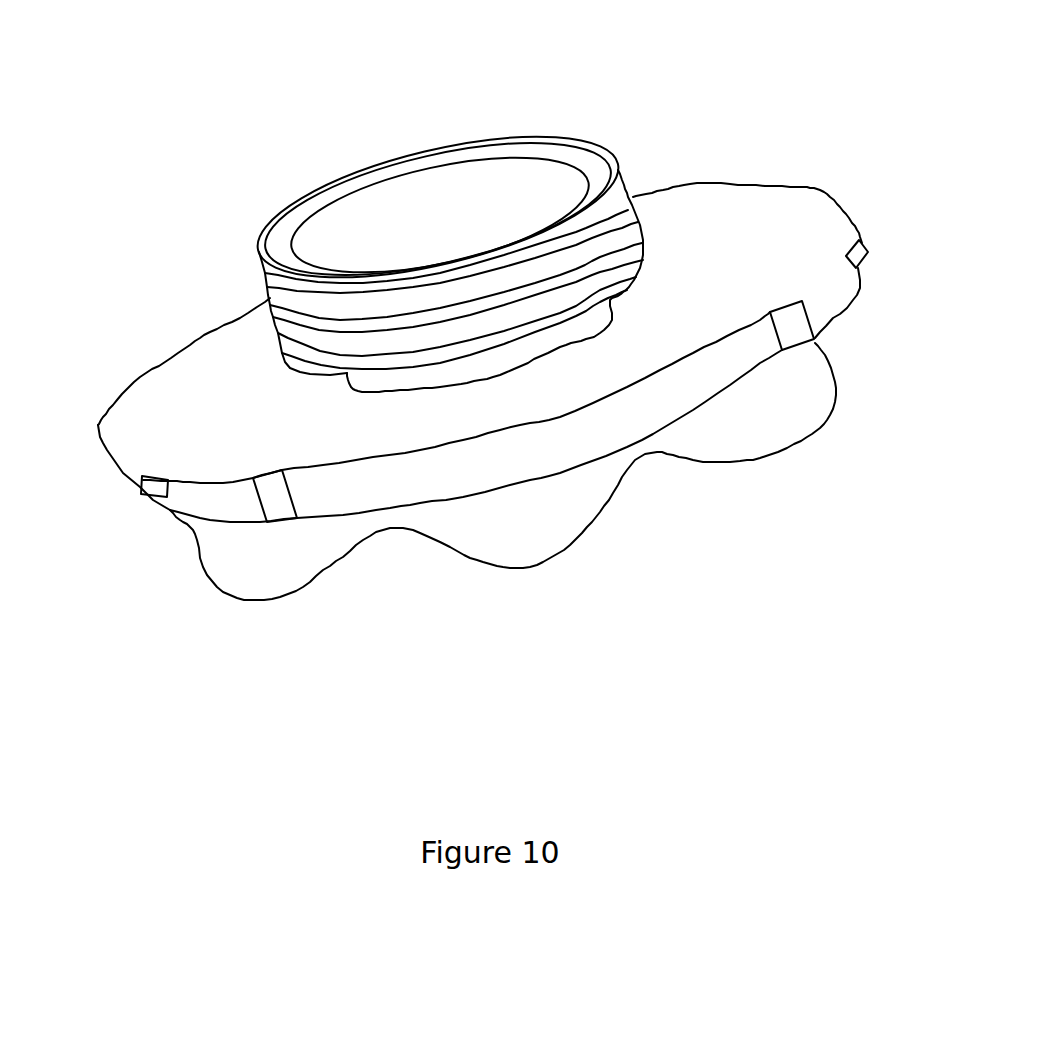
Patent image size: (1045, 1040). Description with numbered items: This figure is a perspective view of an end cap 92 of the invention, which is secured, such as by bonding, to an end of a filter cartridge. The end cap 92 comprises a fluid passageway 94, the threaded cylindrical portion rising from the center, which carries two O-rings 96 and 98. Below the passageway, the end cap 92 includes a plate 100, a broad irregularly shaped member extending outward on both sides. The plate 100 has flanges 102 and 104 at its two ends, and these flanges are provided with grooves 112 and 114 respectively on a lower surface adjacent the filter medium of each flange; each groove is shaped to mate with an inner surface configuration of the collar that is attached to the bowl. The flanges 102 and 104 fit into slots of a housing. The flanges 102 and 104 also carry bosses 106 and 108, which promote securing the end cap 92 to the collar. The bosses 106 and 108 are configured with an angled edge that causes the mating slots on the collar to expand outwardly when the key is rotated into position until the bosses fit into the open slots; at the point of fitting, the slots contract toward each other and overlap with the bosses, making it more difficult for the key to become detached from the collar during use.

The end cap 92 is at (749, 120).
The fluid passageway 94 is at (442, 220).
The O-ring 96 is at (622, 180).
The O-ring 98 is at (633, 217).
The plate 100 is at (462, 417).
The flange 102 is at (200, 507).
The flange 104 is at (843, 295).
The boss 106 is at (857, 240).
The boss 108 is at (143, 492).
The groove 112 is at (275, 535).
The groove 114 is at (810, 353).